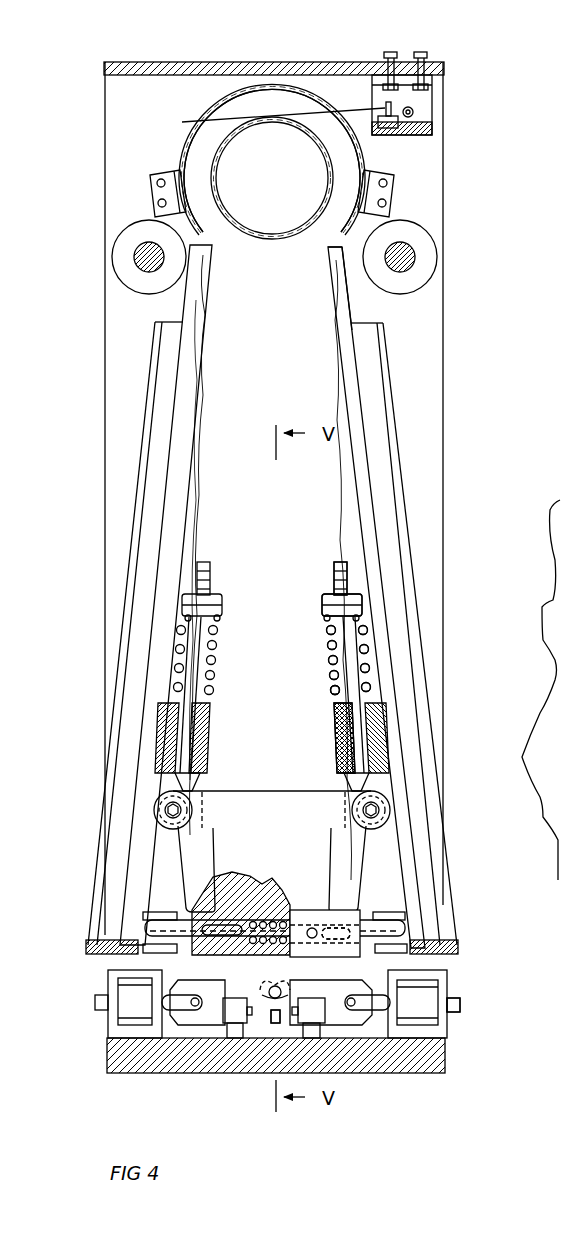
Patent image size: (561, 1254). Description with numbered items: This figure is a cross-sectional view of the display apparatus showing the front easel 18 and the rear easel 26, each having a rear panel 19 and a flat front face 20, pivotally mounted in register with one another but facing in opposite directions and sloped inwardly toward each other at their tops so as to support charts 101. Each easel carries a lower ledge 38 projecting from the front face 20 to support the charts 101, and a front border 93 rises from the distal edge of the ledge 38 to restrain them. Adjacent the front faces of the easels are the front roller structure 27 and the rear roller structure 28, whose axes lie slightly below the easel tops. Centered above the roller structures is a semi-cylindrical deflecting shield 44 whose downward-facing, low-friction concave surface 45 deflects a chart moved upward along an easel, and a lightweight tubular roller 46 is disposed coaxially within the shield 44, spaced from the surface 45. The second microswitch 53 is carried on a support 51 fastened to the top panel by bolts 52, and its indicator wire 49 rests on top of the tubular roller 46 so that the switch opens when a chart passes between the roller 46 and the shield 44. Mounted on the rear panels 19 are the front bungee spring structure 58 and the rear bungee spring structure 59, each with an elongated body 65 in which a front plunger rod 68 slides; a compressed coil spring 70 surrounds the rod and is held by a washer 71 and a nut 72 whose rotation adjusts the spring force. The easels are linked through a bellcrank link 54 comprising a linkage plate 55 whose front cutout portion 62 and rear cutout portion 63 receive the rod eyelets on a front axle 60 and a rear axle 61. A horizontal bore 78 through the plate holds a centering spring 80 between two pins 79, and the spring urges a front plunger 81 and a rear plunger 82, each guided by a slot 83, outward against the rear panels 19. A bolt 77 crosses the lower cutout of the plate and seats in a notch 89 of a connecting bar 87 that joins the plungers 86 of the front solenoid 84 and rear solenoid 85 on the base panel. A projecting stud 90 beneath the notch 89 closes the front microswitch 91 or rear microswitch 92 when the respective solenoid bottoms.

The front easel 18 is at (343, 360).
The rear panel 19 is at (331, 271).
The front face 20 is at (348, 298).
The rear easel 26 is at (207, 385).
The front roller structure 27 is at (440, 245).
The rear roller structure 28 is at (108, 248).
The lower ledge 38 is at (445, 950).
The deflecting shield 44 is at (182, 162).
The concave surface 45 is at (186, 196).
The tubular roller 46 is at (254, 238).
The indicator wire 49 is at (197, 122).
The support 51 is at (432, 128).
The bolts 52 is at (415, 62).
The second microswitch 53 is at (405, 118).
The bellcrank link 54 is at (283, 788).
The linkage plate 55 is at (251, 790).
The front bungee spring structure 58 is at (322, 650).
The rear bungee spring structure 59 is at (212, 560).
The front axle 60 is at (370, 818).
The rear axle 61 is at (176, 818).
The front cutout portion 62 is at (352, 796).
The rear cutout portion 63 is at (190, 792).
The elongated body 65 is at (336, 717).
The front plunger rod 68 is at (344, 560).
The compressed coil spring 70 is at (330, 688).
The washer 71 is at (325, 608).
The nut 72 is at (332, 594).
The bolt 77 is at (285, 988).
The bore 78 is at (186, 924).
The pins 79 is at (302, 925).
The centering spring 80 is at (275, 887).
The front plunger 81 is at (375, 918).
The rear plunger 82 is at (158, 912).
The slot 83 is at (336, 926).
The front solenoid 84 is at (450, 1032).
The rear solenoid 85 is at (104, 1040).
The plungers 86 is at (462, 1004).
The connecting bar 87 is at (195, 1032).
The notch 89 is at (268, 986).
The projecting stud 90 is at (272, 1024).
The front microswitch 91 is at (312, 1028).
The rear microswitch 92 is at (232, 1030).
The front border 93 is at (448, 913).
The charts 101 is at (120, 835).